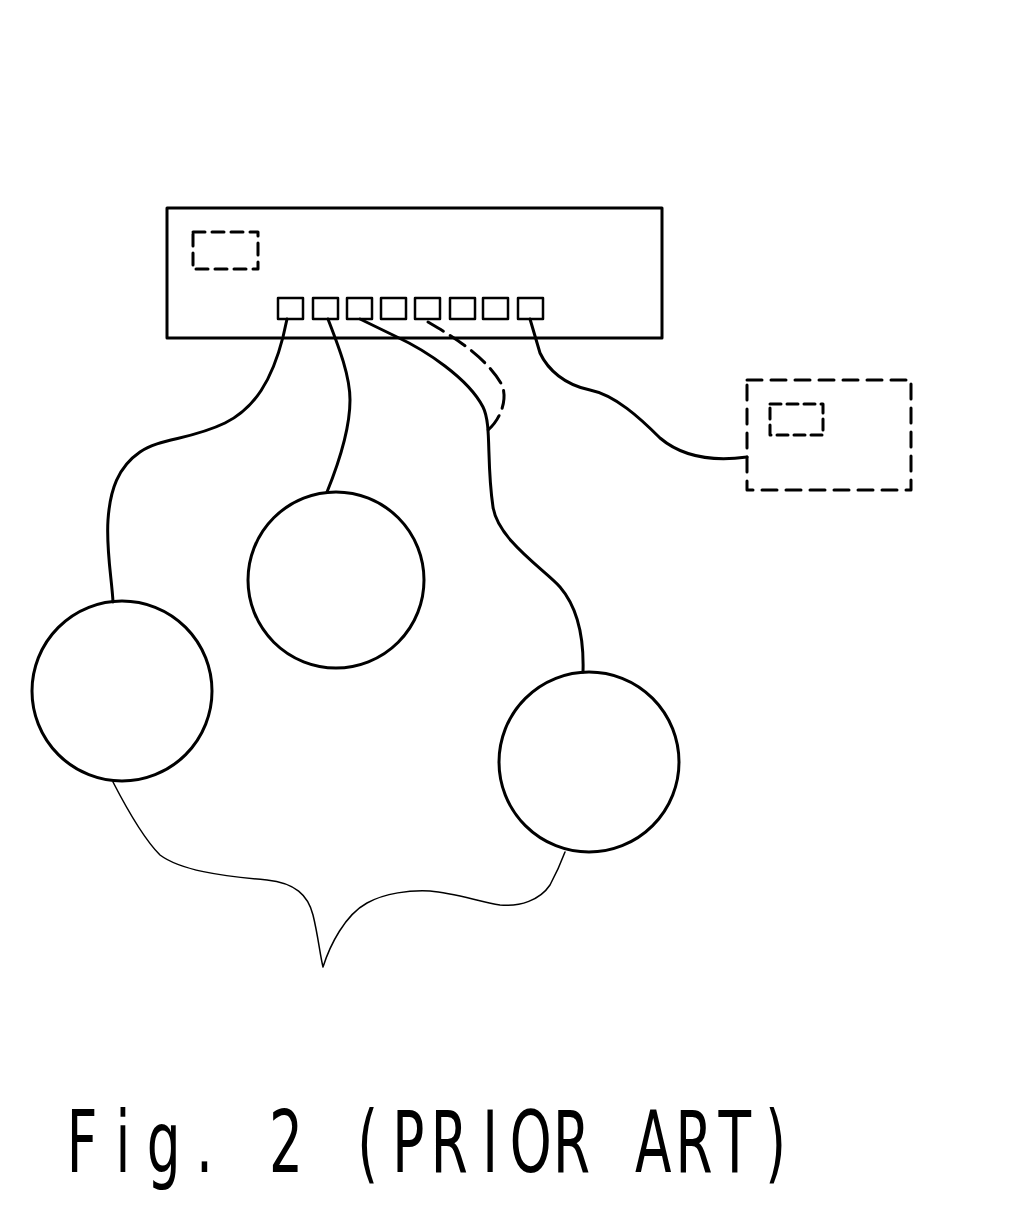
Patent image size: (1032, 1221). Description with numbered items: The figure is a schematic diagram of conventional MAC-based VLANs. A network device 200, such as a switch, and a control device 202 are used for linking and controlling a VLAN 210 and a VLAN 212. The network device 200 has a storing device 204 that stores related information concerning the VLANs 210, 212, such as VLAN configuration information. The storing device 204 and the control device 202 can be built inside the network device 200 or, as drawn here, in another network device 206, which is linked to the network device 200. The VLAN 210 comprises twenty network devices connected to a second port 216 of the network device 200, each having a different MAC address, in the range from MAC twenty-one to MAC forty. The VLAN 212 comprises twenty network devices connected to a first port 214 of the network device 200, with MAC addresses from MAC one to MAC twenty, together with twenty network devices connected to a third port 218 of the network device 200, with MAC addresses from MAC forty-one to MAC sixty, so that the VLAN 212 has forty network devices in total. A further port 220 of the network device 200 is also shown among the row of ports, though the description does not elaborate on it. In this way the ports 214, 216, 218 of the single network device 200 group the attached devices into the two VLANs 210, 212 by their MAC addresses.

The network device 200 is at (647, 278).
The control device 202 is at (810, 415).
The storing device 204 is at (218, 232).
The another network device 206 is at (865, 470).
The VLAN 210 is at (335, 648).
The VLAN 212 is at (339, 893).
The first port 214 is at (293, 305).
The second port 216 is at (330, 305).
The third port 218 is at (360, 305).
The port 220 is at (427, 305).